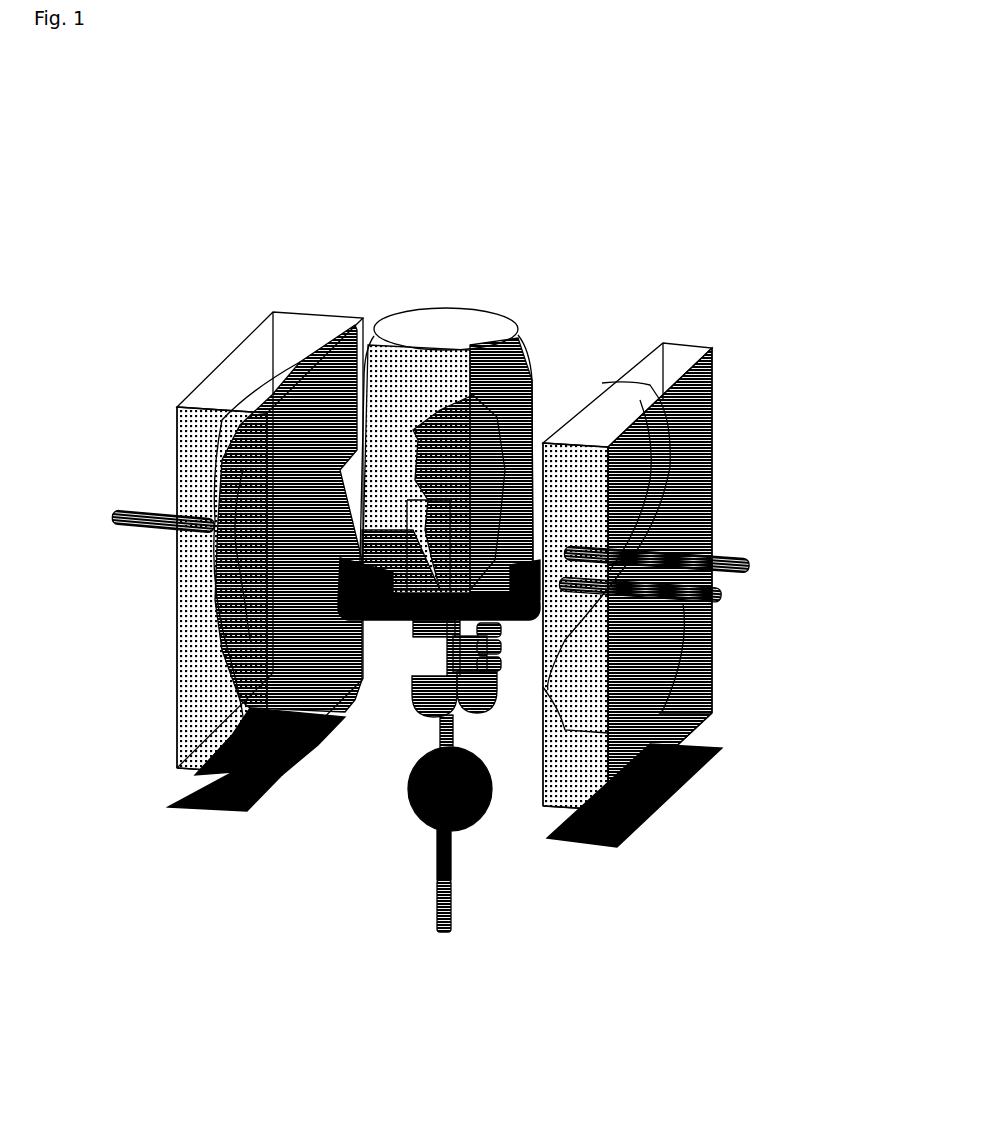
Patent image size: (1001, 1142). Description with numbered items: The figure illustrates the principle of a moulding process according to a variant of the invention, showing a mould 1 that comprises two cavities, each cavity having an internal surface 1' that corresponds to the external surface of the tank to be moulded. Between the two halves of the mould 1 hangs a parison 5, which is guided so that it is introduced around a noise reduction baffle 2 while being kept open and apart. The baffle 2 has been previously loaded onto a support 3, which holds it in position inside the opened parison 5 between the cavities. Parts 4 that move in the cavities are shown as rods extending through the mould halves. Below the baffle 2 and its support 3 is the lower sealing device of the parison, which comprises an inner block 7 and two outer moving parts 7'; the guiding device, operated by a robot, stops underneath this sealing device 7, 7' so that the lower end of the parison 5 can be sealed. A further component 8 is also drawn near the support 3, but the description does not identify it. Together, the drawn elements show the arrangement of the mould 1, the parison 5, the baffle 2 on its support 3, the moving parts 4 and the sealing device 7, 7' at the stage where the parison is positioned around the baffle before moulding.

The mould 1 is at (460, 549).
The internal surface 1' is at (453, 525).
The noise reduction baffle 2 is at (410, 712).
The support 3 is at (435, 733).
The parts that move in the cavities 4 is at (97, 514).
The parison 5 is at (513, 367).
The inner block 7 is at (337, 839).
The outer moving parts 7' is at (386, 822).
The clamp bracket 8 is at (383, 625).